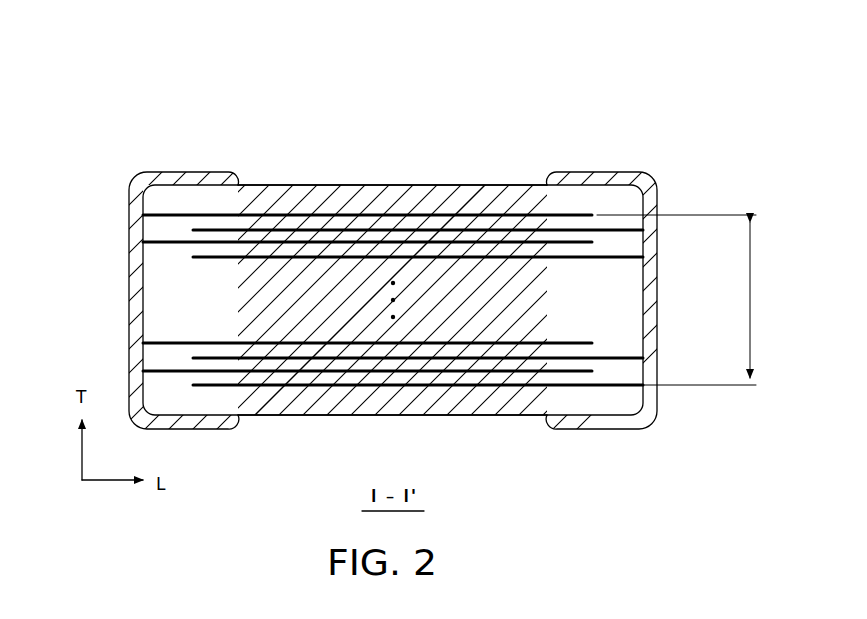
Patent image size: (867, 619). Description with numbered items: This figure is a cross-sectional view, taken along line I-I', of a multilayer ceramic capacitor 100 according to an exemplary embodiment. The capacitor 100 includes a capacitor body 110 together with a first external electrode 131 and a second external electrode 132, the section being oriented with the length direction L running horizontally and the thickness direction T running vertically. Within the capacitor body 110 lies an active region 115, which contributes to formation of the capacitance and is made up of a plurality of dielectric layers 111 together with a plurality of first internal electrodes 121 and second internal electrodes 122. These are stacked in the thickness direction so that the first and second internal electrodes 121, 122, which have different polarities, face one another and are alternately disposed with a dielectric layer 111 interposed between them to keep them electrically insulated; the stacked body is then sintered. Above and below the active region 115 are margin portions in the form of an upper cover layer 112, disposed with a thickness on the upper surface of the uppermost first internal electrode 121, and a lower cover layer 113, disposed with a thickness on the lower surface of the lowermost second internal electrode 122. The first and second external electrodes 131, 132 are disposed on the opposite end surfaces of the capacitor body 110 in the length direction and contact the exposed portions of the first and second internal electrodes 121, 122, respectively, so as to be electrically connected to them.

The multilayer ceramic capacitor 100 is at (413, 52).
The capacitor body 110 is at (390, 185).
The dielectric layer 111 is at (620, 247).
The upper cover layer 112 is at (478, 196).
The lower cover layer 113 is at (479, 408).
The active region 115 is at (695, 300).
The first internal electrode 121 is at (162, 242).
The second internal electrode 122 is at (625, 258).
The first external electrode 131 is at (184, 172).
The second external electrode 132 is at (605, 178).